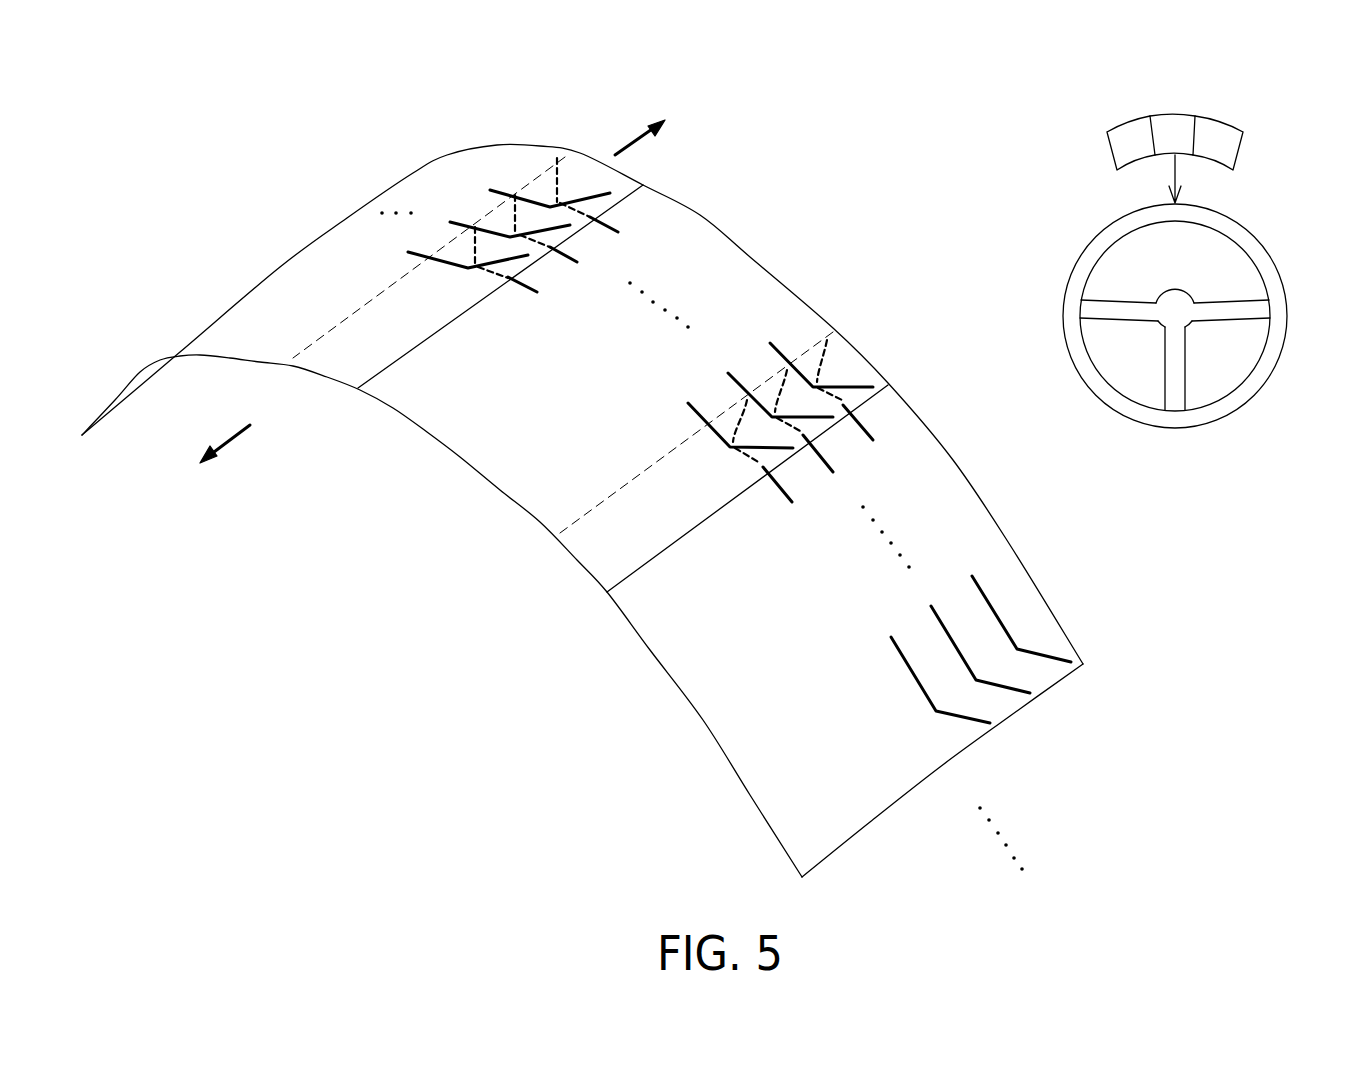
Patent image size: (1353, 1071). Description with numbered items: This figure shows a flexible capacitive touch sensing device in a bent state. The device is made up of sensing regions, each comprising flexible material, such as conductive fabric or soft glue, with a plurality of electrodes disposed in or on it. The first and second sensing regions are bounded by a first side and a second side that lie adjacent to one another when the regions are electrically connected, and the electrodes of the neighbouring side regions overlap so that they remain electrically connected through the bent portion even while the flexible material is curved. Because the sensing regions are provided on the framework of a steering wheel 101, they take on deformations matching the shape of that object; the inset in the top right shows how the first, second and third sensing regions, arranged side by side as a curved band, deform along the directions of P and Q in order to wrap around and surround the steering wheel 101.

The direction P is at (650, 126).
The direction Q is at (213, 454).
The steering wheel 101 is at (1278, 313).